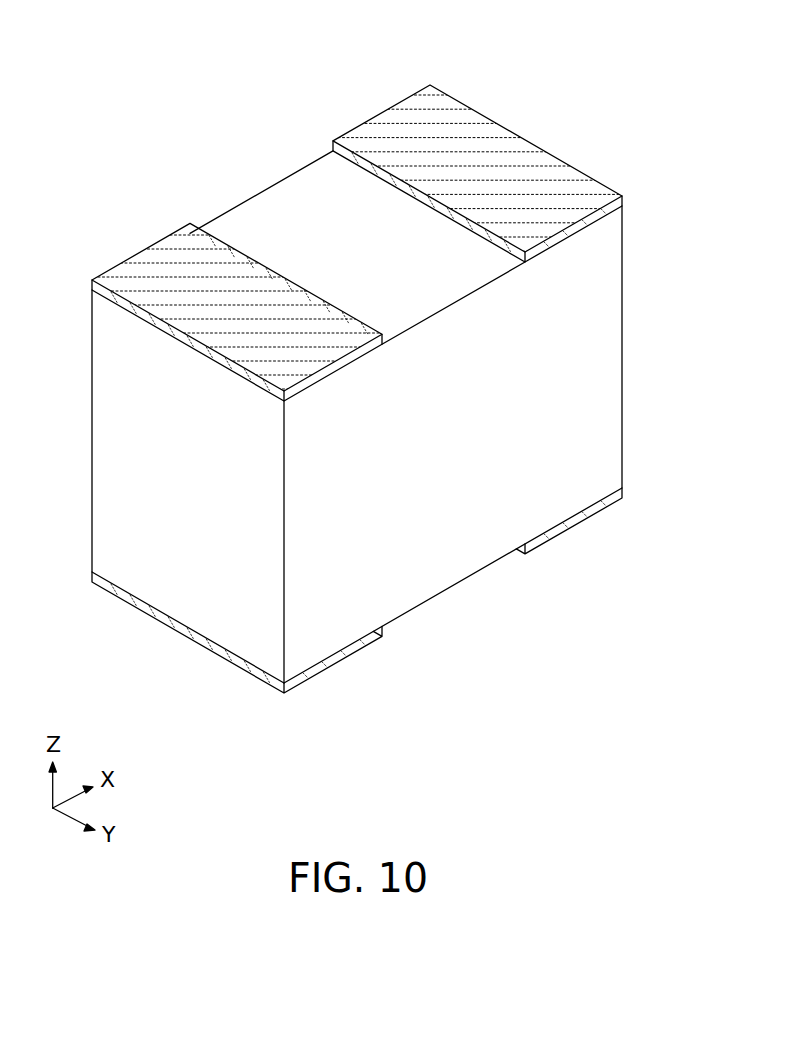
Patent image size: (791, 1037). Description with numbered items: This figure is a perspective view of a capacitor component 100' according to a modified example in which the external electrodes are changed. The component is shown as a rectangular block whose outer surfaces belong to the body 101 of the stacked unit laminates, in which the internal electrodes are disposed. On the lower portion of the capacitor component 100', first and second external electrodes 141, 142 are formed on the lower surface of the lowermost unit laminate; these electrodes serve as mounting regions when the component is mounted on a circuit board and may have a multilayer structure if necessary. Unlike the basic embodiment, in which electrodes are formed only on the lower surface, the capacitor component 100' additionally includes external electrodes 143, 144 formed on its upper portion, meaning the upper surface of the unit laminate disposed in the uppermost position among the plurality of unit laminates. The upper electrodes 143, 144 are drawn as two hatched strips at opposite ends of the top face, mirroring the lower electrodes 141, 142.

The capacitor component 100' is at (373, 378).
The body 101 is at (272, 208).
The first external electrode 141 is at (333, 663).
The second external electrode 142 is at (577, 525).
The external electrode 143 is at (147, 272).
The external electrode 144 is at (388, 132).